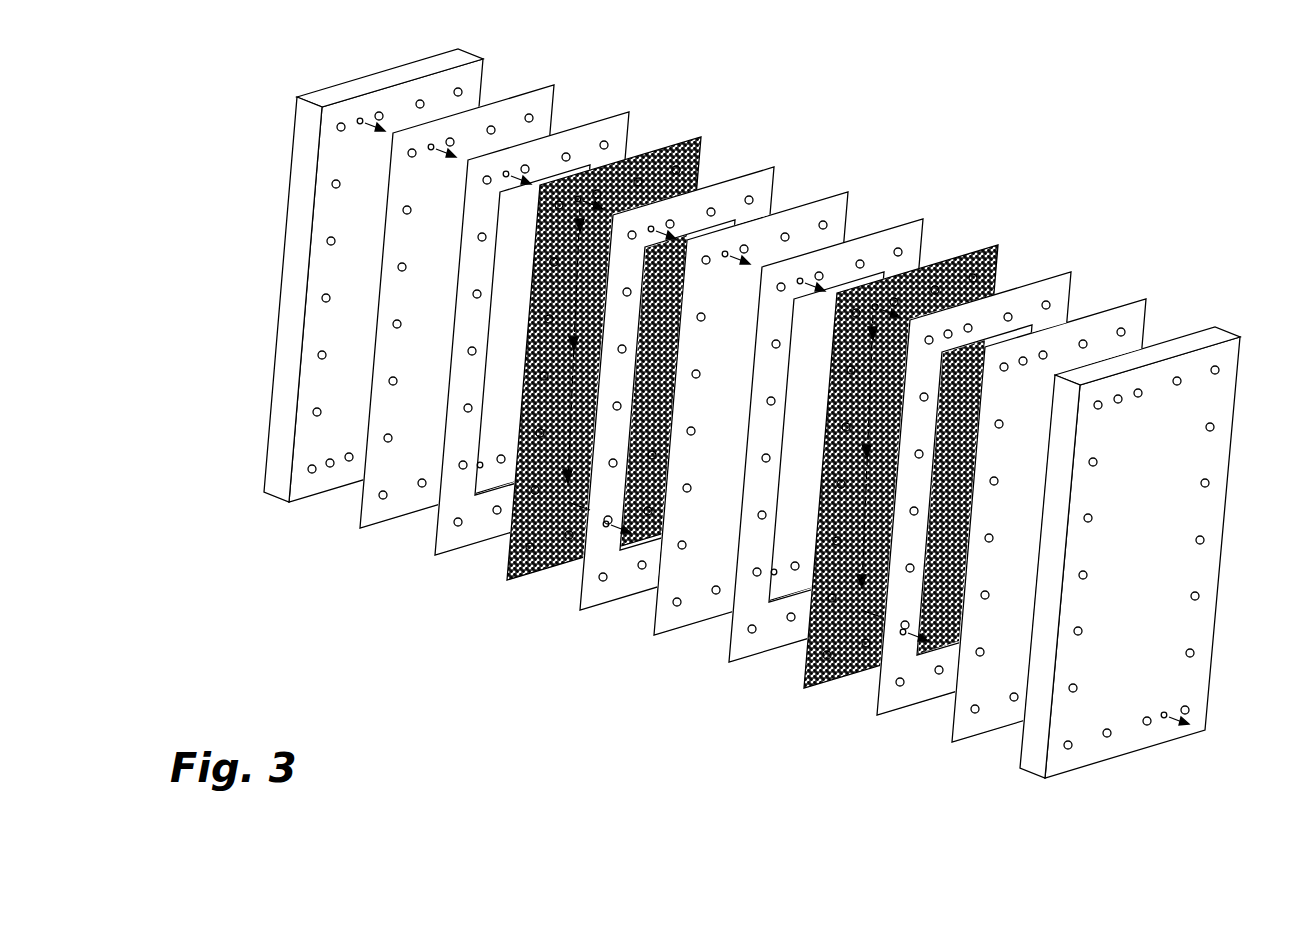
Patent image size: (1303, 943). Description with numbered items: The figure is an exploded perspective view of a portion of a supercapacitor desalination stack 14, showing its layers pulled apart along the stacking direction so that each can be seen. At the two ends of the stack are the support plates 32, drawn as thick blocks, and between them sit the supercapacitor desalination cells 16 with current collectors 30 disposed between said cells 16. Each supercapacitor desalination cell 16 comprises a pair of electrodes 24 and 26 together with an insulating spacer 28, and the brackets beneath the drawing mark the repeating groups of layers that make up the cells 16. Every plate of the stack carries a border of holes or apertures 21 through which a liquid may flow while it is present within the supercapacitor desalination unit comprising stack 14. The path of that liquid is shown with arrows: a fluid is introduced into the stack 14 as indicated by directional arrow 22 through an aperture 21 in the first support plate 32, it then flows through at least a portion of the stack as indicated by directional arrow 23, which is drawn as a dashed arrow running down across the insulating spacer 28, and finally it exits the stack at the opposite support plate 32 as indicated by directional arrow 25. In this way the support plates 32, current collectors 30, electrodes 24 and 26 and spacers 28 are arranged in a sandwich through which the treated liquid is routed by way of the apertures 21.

The supercapacitor desalination stack 14 is at (1124, 177).
The supercapacitor desalination cell 16 is at (428, 568).
The aperture 21 is at (361, 118).
The directional arrow 22 is at (266, 86).
The directional arrow 23 is at (570, 438).
The electrode 24 is at (630, 112).
The directional arrow 25 is at (1172, 711).
The electrode 26 is at (777, 165).
The insulating spacer 28 is at (703, 139).
The current collector 30 is at (555, 87).
The support plate 32 is at (1241, 346).